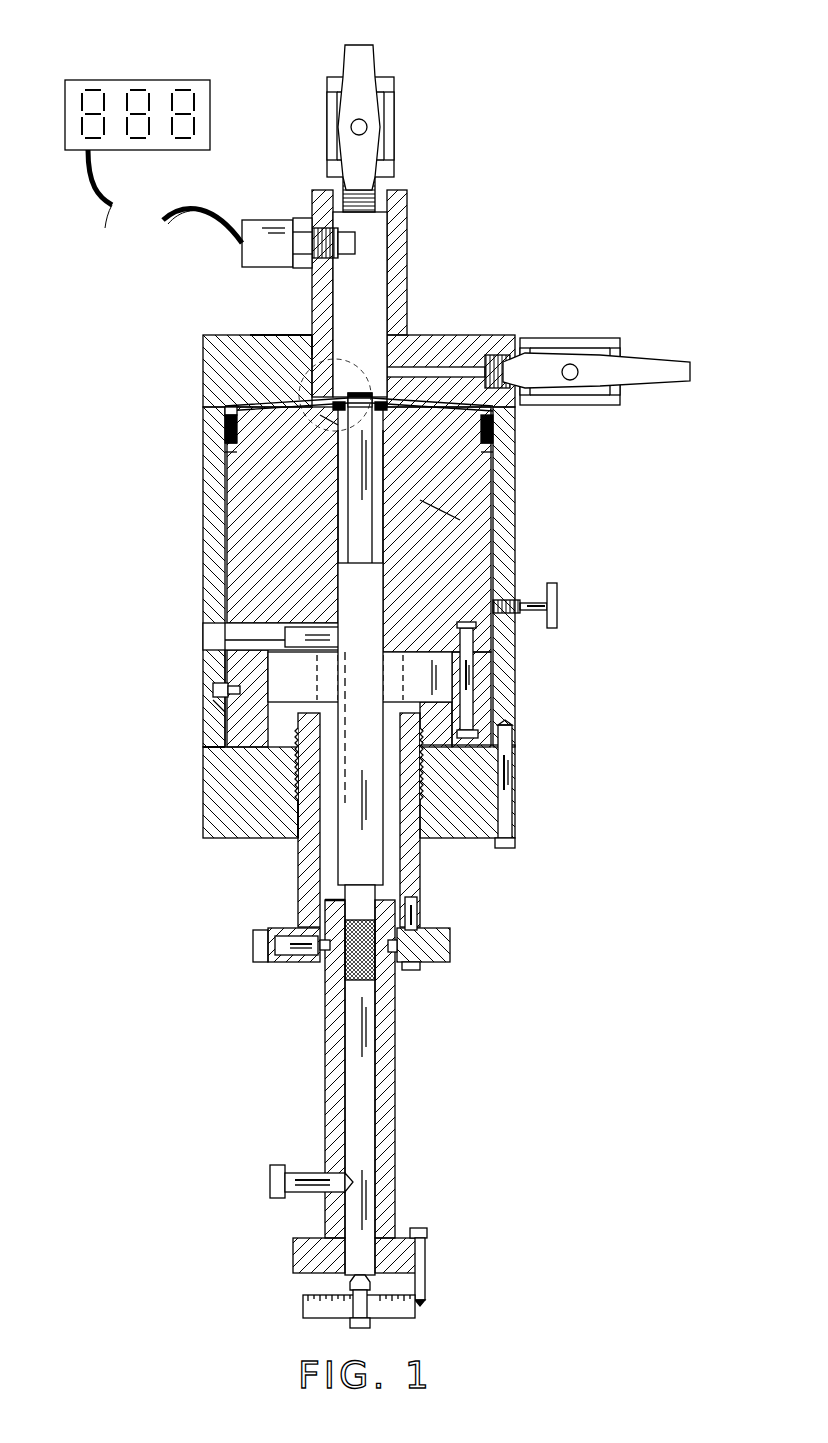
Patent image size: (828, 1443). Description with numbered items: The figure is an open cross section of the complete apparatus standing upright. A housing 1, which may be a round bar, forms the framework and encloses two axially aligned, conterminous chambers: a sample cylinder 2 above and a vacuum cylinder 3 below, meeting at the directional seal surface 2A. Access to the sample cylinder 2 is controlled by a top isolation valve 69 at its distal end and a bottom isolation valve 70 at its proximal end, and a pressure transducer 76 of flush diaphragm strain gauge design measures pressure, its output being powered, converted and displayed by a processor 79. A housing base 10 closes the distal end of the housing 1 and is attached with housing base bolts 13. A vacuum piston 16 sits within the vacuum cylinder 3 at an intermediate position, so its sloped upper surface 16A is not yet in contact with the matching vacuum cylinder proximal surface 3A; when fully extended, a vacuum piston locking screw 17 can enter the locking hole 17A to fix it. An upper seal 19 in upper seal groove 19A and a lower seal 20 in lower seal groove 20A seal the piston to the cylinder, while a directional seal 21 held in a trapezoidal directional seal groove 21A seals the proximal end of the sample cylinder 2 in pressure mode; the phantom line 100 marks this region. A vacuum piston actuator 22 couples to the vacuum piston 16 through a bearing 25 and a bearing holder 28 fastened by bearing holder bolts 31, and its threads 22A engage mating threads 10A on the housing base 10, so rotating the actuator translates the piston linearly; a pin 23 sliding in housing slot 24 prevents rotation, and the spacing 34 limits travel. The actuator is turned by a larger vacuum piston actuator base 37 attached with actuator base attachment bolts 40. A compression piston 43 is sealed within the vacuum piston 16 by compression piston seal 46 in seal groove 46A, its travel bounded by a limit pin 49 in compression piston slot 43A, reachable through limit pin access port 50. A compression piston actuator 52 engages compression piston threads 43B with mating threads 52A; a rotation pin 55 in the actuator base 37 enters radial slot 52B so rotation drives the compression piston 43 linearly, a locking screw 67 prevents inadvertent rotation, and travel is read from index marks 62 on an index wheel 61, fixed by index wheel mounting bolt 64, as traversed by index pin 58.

The housing 1 is at (455, 332).
The sample cylinder 2 is at (352, 292).
The directional seal surface 2A is at (292, 354).
The vacuum cylinder 3 is at (305, 393).
The vacuum cylinder proximal surface 3A is at (338, 402).
The housing base 10 is at (218, 836).
The mating threads 10A is at (300, 782).
The housing base bolts 13 is at (505, 805).
The vacuum piston 16 is at (495, 458).
The vacuum piston upper surface 16A is at (470, 482).
The vacuum piston locking screw 17 is at (552, 604).
The vacuum piston locking hole 17A is at (505, 615).
The vacuum piston upper seal 19 is at (227, 415).
The upper seal groove 19A is at (330, 420).
The vacuum piston lower seal 20 is at (227, 432).
The lower seal groove 20A is at (227, 452).
The directional seal 21 is at (470, 545).
The directional seal groove 21A is at (440, 500).
The vacuum piston actuator 22 is at (425, 872).
The threads 22A is at (297, 745).
The pin 23 is at (213, 690).
The housing slot 24 is at (222, 712).
The bearing 25 is at (302, 660).
The bearing holder 28 is at (474, 672).
The bearing holder bolts 31 is at (474, 710).
The spacing 34 is at (212, 750).
The vacuum piston actuator base 37 is at (450, 950).
The actuator base attachment bolts 40 is at (420, 968).
The compression piston 43 is at (385, 540).
The compression piston slot 43A is at (342, 726).
The compression piston threads 43B is at (345, 960).
The compression piston seal 46 is at (338, 470).
The compression piston seal groove 46A is at (340, 500).
The limit pin 49 is at (232, 625).
The limit pin access port 50 is at (232, 640).
The compression piston actuator 52 is at (398, 1068).
The mating threads 52A is at (322, 910).
The radial slot 52B is at (417, 933).
The rotation pin 55 is at (255, 948).
The index pin 58 is at (428, 1228).
The index wheel 61 is at (416, 1305).
The index marks 62 is at (325, 1296).
The index wheel mounting bolt 64 is at (372, 1325).
The locking screw 67 is at (270, 1183).
The top isolation valve 69 is at (398, 120).
The bottom isolation valve 70 is at (600, 345).
The pressure transducer 76 is at (262, 245).
The processor 79 is at (145, 78).
The phantom line 100 is at (285, 330).